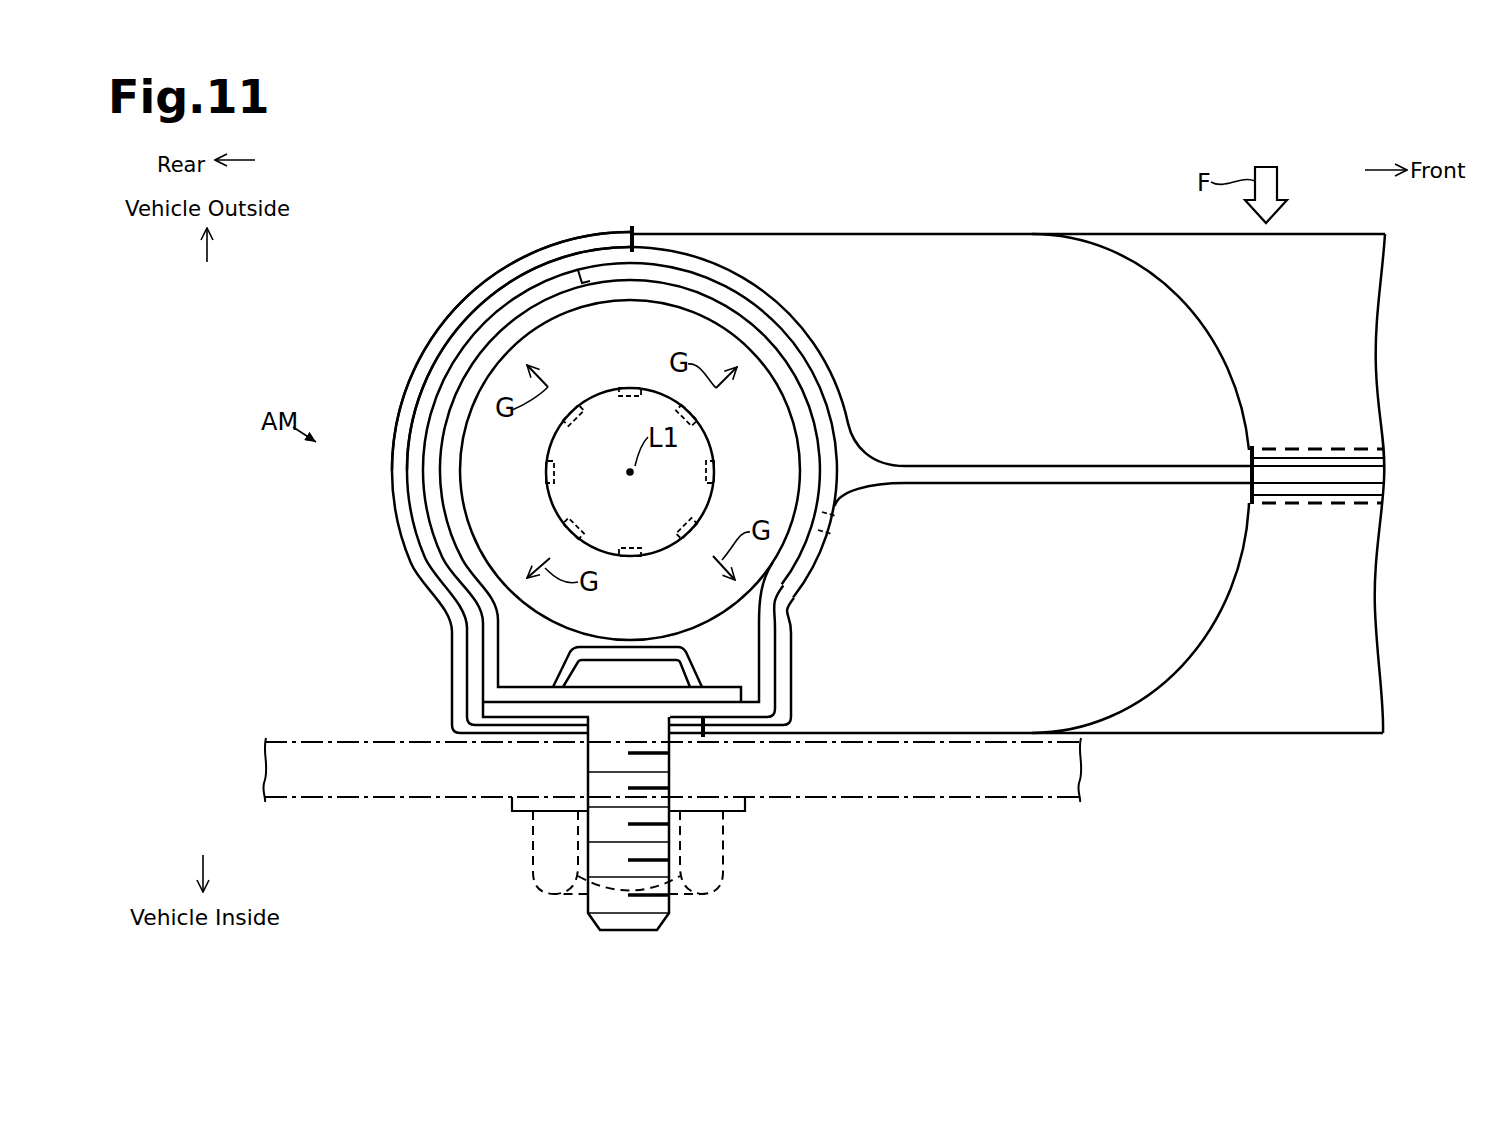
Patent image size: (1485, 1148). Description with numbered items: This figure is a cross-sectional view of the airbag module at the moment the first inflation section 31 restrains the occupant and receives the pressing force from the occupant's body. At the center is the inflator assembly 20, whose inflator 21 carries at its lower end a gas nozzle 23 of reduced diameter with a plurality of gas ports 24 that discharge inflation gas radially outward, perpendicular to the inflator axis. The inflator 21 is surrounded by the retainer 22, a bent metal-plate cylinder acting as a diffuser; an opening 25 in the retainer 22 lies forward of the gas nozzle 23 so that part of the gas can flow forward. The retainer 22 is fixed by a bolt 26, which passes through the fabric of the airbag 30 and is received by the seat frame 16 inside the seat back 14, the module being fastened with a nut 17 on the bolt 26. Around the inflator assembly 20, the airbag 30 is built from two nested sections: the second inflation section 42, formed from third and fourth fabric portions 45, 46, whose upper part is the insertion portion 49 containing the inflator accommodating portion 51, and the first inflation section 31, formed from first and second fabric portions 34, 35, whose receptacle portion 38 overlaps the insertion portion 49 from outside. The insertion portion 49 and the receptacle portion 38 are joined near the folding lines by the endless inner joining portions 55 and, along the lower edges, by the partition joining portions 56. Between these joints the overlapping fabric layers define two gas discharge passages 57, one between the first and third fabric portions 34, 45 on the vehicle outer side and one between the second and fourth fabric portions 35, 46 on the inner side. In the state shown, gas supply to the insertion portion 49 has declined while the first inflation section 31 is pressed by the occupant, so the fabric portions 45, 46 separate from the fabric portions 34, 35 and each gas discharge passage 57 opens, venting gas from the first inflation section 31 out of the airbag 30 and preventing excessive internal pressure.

The seat back 14 is at (930, 851).
The seat frame 16 is at (375, 800).
The nut 17 is at (725, 842).
The inflator assembly 20 is at (378, 586).
The inflator 21 is at (470, 583).
The retainer 22 is at (467, 647).
The gas nozzle 23 is at (661, 556).
The gas port 24 is at (630, 386).
The opening 25 is at (842, 518).
The bolt 26 is at (668, 905).
The airbag 30 is at (1280, 806).
The first inflation section 31 is at (452, 312).
The receptacle portion 38 is at (511, 351).
The first fabric portion 34 is at (975, 233).
The second fabric portion 35 is at (955, 735).
The second inflation section 42 is at (432, 365).
The insertion portion 49 is at (518, 358).
The third fabric portion 45 is at (975, 464).
The fourth fabric portion 46 is at (975, 485).
The inflator accommodating portion 51 is at (411, 512).
The inner joining portion 55 is at (632, 226).
The partition joining portion 56 is at (1310, 505).
The gas discharge passage 57 is at (1147, 292).